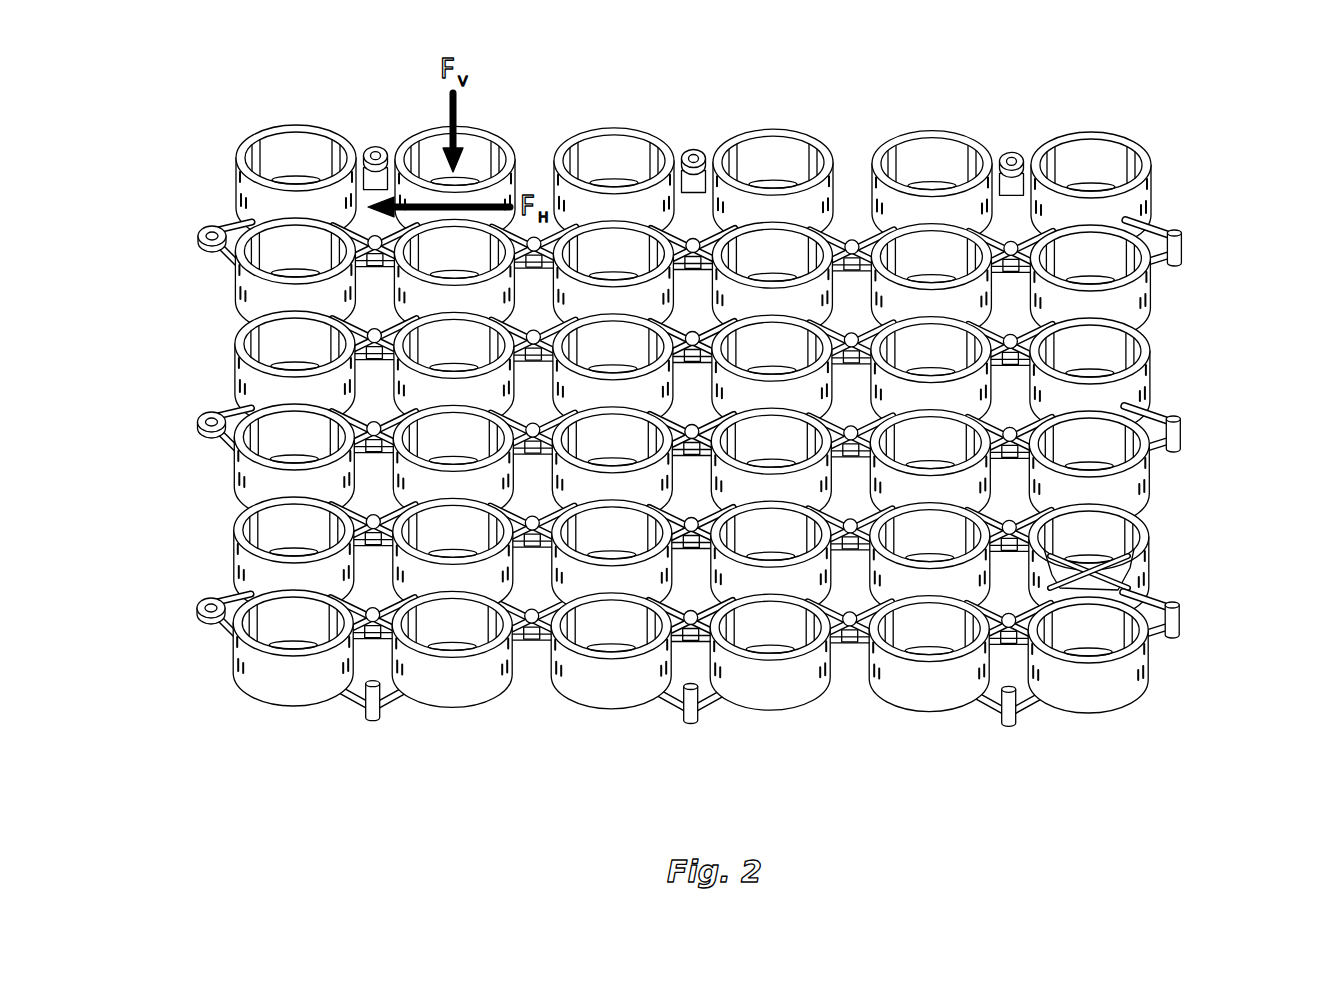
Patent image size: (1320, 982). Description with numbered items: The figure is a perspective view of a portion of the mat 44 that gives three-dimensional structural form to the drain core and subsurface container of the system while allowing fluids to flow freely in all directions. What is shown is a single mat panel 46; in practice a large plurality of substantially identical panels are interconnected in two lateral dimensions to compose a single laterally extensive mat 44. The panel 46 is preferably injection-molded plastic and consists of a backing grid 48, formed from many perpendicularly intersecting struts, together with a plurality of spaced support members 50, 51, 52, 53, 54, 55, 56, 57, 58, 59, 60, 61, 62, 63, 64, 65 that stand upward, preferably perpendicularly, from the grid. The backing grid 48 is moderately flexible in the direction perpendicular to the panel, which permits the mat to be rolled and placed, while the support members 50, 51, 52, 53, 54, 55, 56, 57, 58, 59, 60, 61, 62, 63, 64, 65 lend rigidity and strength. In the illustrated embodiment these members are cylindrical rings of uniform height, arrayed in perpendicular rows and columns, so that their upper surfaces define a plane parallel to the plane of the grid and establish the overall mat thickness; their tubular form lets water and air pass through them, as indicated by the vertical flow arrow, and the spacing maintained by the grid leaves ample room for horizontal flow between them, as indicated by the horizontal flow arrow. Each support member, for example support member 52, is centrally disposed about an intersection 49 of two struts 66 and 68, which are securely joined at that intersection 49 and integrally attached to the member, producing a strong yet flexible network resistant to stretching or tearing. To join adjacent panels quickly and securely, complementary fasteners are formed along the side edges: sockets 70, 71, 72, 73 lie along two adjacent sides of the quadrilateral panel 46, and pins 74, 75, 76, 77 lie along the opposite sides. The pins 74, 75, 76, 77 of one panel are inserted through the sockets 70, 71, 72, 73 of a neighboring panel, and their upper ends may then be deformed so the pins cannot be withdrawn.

The mat 44 is at (1097, 100).
The mat panel 46 is at (773, 140).
The backing grid 48 is at (692, 450).
The intersection 49 is at (1090, 568).
The support member 50 is at (231, 173).
The support member 51 is at (231, 276).
The support member 52 is at (231, 369).
The support member 53 is at (230, 462).
The support member 54 is at (230, 555).
The support member 55 is at (230, 648).
The support member 56 is at (452, 696).
The support member 57 is at (611, 697).
The support member 58 is at (770, 697).
The support member 59 is at (929, 698).
The support member 60 is at (1122, 699).
The support member 61 is at (1164, 562).
The support member 62 is at (1164, 469).
The support member 63 is at (1165, 376).
The support member 64 is at (1164, 283).
The support member 65 is at (1165, 190).
The strut 66 is at (1009, 599).
The strut 68 is at (1211, 595).
The socket 70 is at (179, 225).
The socket 71 is at (179, 413).
The socket 72 is at (179, 603).
The socket 73 is at (357, 112).
The pin 74 is at (348, 741).
The pin 75 is at (691, 743).
The pin 76 is at (1028, 743).
The pin 77 is at (1231, 645).